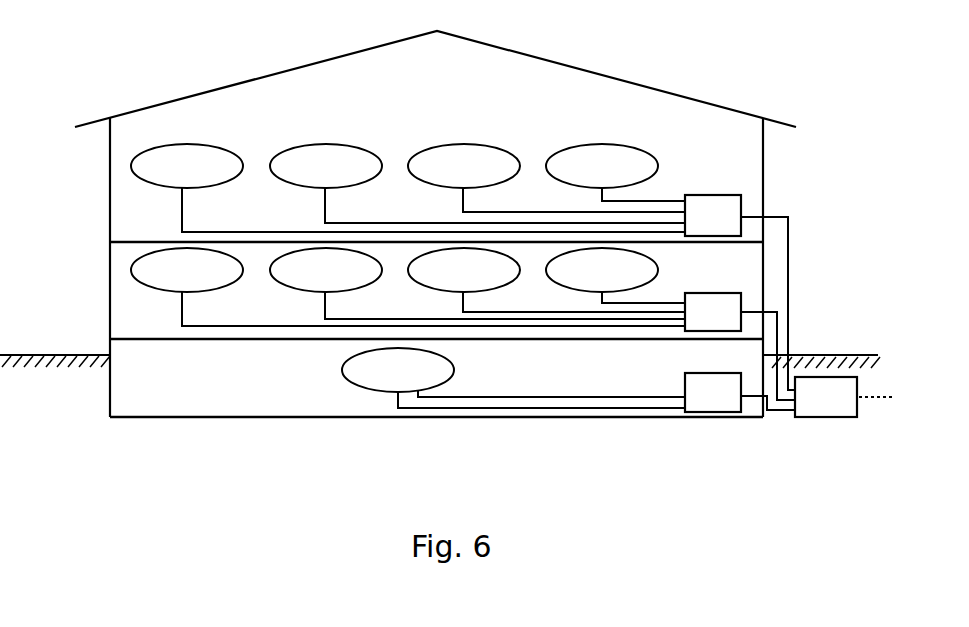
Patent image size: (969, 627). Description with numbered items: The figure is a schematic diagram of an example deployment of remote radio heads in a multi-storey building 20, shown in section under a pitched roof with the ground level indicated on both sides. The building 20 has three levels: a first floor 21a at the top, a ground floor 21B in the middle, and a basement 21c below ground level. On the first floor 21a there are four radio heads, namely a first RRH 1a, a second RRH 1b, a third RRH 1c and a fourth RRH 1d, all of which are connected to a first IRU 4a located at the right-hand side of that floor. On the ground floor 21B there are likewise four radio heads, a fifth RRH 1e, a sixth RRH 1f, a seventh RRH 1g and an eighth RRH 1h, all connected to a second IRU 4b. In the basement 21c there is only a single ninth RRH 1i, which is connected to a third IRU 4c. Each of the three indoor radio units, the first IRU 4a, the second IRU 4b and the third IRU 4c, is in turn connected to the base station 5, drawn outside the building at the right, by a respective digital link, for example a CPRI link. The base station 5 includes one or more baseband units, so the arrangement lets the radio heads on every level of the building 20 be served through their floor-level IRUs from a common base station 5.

The multi-storey building 20 is at (146, 106).
The first floor 21a is at (119, 195).
The ground floor 21B is at (119, 293).
The basement 21c is at (119, 398).
The first RRH 1a is at (171, 179).
The second RRH 1b is at (310, 179).
The third RRH 1c is at (448, 179).
The fourth RRH 1d is at (586, 179).
The fifth RRH 1e is at (171, 283).
The sixth RRH 1f is at (312, 283).
The seventh RRH 1g is at (448, 283).
The eighth RRH 1h is at (586, 283).
The ninth RRH 1i is at (386, 383).
The first IRU 4a is at (697, 228).
The second IRU 4b is at (697, 325).
The third IRU 4c is at (697, 405).
The base station 5 is at (818, 410).